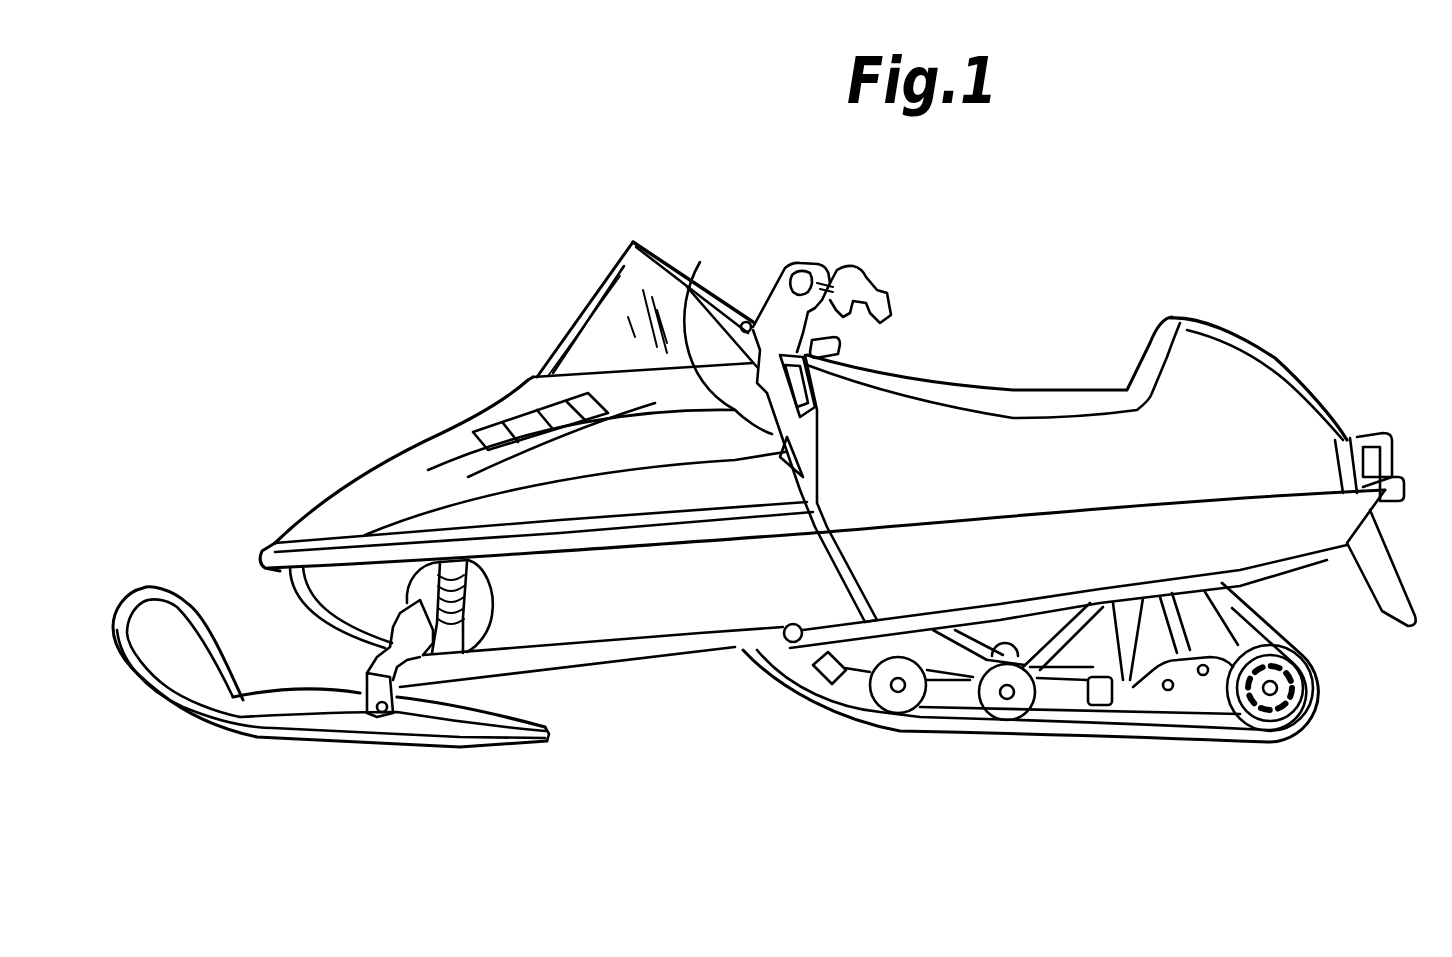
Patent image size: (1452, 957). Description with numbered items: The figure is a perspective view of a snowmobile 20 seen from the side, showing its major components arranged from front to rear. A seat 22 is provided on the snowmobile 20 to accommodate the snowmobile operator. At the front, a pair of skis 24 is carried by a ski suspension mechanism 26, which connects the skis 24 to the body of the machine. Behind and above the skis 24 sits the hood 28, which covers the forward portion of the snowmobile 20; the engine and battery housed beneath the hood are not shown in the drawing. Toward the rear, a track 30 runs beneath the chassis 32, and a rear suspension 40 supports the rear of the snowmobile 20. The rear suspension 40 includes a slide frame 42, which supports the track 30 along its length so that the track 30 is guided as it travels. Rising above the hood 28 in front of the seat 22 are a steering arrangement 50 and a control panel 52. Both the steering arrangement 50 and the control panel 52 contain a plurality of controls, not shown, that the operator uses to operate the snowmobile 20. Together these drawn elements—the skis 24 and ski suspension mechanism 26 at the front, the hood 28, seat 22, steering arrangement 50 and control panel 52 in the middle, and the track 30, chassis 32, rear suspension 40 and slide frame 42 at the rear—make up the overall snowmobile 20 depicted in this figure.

The snowmobile 20 is at (828, 777).
The seat 22 is at (1020, 392).
The skis 24 is at (177, 739).
The ski suspension mechanism 26 is at (287, 690).
The hood 28 is at (338, 495).
The track 30 is at (1183, 743).
The chassis 32 is at (1309, 602).
The rear suspension 40 is at (1027, 759).
The slide frame 42 is at (1147, 700).
The steering arrangement 50 is at (827, 273).
The control panel 52 is at (700, 262).